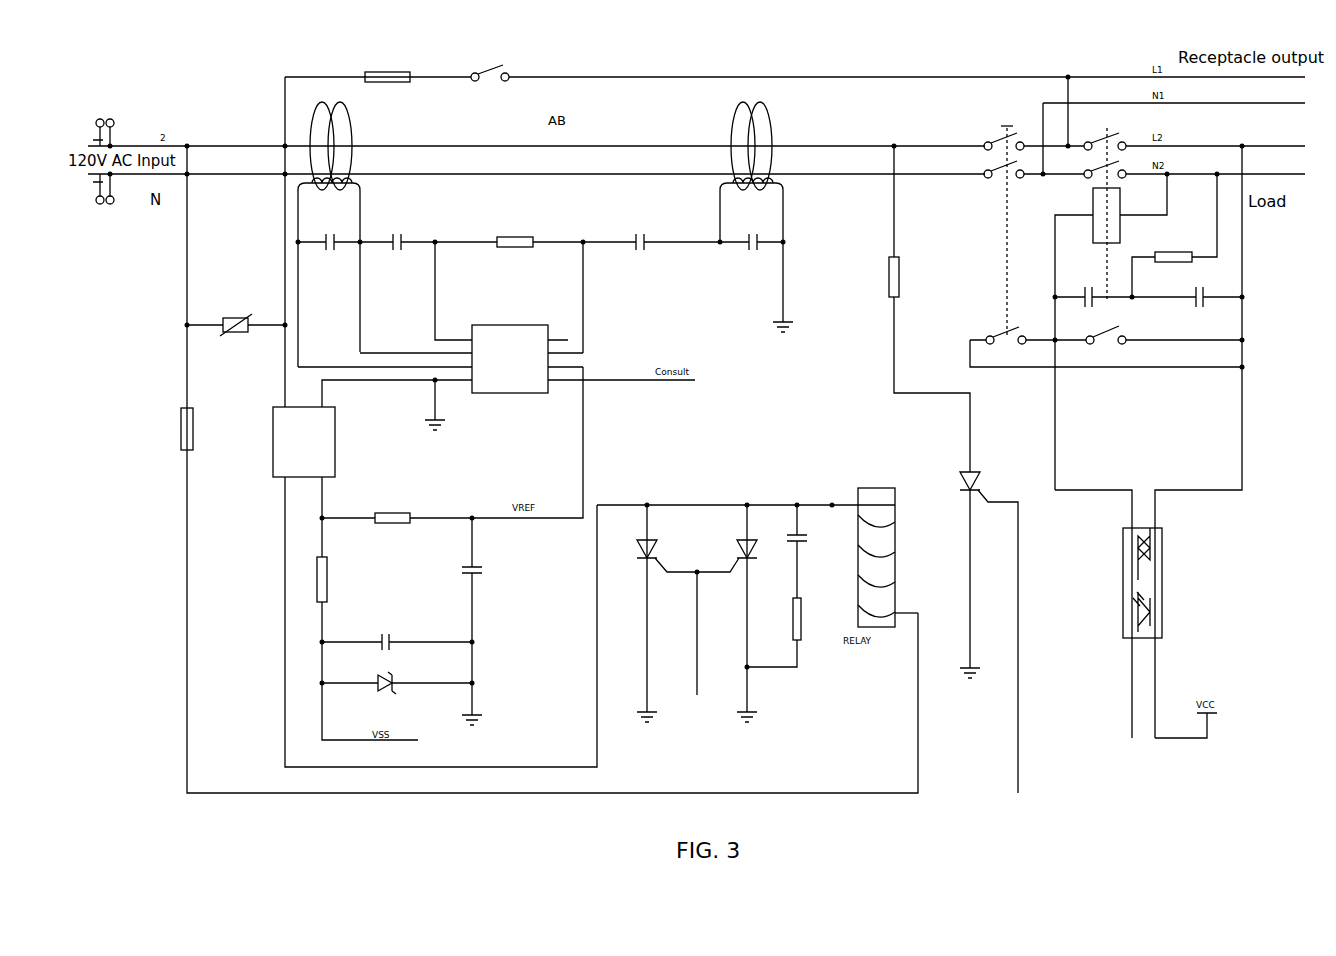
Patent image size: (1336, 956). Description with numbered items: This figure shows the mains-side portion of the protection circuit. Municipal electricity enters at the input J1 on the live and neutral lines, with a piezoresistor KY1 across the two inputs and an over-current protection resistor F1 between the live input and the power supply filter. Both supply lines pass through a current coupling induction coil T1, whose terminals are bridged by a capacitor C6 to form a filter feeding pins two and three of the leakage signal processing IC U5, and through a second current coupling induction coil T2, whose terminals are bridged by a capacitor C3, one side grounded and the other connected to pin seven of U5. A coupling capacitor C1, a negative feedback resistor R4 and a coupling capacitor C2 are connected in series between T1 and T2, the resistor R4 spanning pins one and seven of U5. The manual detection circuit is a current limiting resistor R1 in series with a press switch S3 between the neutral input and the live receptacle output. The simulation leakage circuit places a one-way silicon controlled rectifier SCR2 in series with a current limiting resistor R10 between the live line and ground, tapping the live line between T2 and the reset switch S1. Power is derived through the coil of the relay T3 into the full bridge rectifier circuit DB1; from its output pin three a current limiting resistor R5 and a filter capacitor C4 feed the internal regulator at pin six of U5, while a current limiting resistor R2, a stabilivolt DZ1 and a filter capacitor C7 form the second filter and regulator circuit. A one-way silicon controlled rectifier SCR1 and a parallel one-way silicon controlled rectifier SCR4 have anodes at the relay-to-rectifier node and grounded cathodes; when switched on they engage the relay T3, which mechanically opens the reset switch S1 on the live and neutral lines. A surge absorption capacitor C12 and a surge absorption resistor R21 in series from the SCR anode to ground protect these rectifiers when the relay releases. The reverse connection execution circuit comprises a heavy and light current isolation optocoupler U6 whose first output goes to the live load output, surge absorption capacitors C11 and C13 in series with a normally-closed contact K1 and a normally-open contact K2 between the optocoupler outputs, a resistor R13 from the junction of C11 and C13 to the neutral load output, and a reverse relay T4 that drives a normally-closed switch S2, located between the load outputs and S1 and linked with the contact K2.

The AC input connector J1 is at (103, 154).
The current coupling induction coil T1 is at (328, 227).
The capacitor C6 is at (329, 237).
The coupling capacitor C1 is at (399, 239).
The negative feedback resistor R4 is at (510, 244).
The coupling capacitor C2 is at (651, 239).
The current coupling induction coil T2 is at (747, 212).
The capacitor C3 is at (752, 237).
The current limiting resistor R1 is at (387, 77).
The press switch S3 is at (494, 64).
The reset switch S1 is at (1003, 219).
The normally-closed switch S2 is at (1105, 207).
The reverse relay T4 is at (1112, 331).
The resistor R13 is at (1176, 235).
The surge absorption capacitor C11 is at (1093, 289).
The surge absorption capacitor C13 is at (1188, 293).
The current limiting resistor R10 is at (929, 308).
The one-way silicon controlled rectifier SCR2 is at (991, 619).
The normally-closed contact K1 is at (1106, 339).
The normally-open contact K2 is at (1158, 441).
The heavy and light current isolation optocoupler U6 is at (1131, 614).
The leakage signal processing IC U5 is at (496, 380).
The varistor KY1 is at (236, 323).
The over-current protection resistor F1 is at (195, 427).
The rectifier circuit DB1 is at (435, 587).
The current limiting resistor R5 is at (397, 527).
The filter capacitor C4 is at (495, 621).
The current limiting resistor R2 is at (367, 646).
The filter capacitor C7 is at (397, 632).
The stabilivolt DZ1 is at (397, 681).
The one-way silicon controlled rectifier SCR4 is at (746, 613).
The one-way silicon controlled rectifier SCR1 is at (746, 613).
The surge absorption capacitor C12 is at (821, 551).
The surge absorption resistor R21 is at (787, 630).
The relay T3 is at (874, 549).